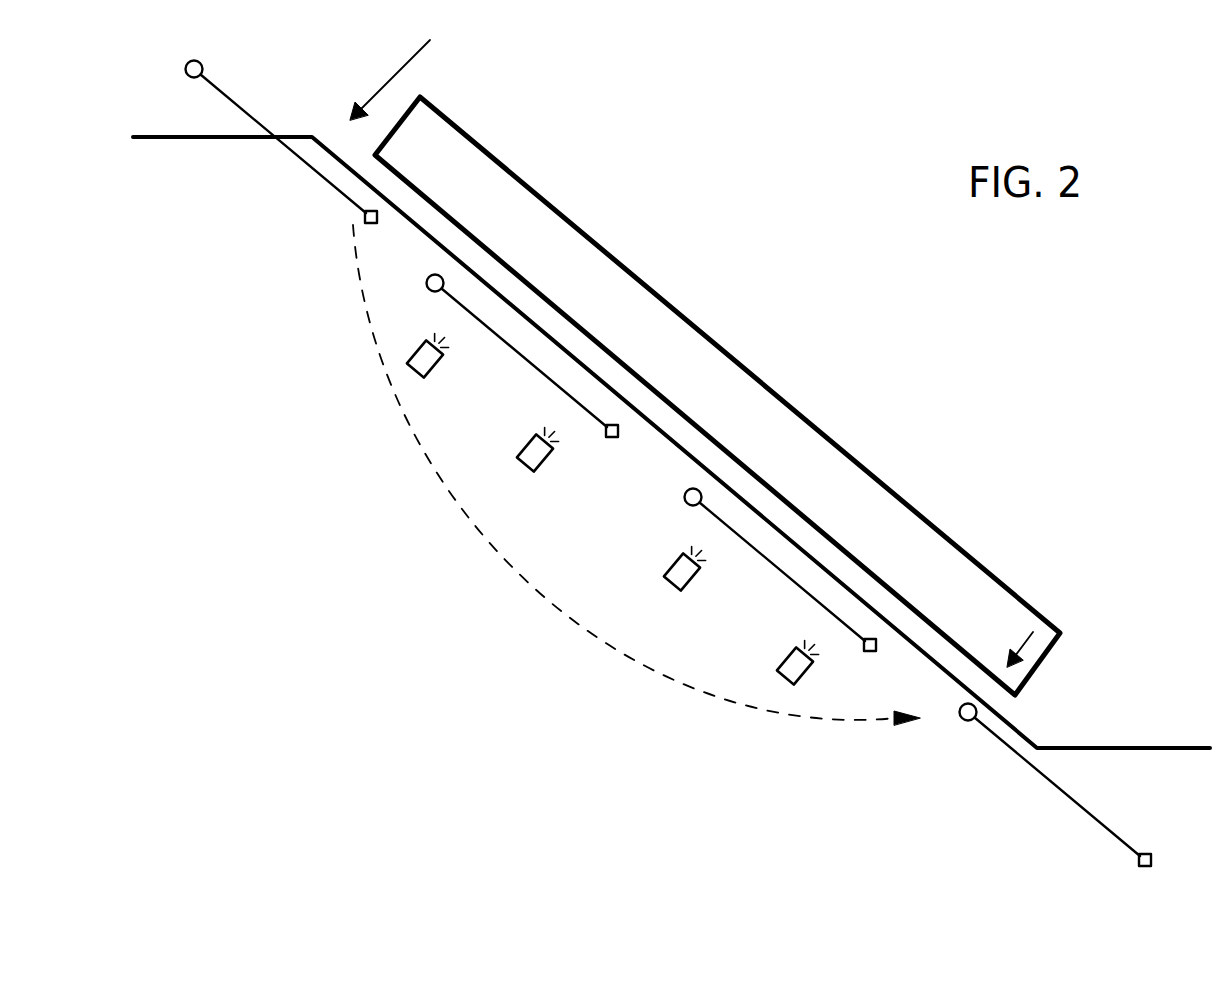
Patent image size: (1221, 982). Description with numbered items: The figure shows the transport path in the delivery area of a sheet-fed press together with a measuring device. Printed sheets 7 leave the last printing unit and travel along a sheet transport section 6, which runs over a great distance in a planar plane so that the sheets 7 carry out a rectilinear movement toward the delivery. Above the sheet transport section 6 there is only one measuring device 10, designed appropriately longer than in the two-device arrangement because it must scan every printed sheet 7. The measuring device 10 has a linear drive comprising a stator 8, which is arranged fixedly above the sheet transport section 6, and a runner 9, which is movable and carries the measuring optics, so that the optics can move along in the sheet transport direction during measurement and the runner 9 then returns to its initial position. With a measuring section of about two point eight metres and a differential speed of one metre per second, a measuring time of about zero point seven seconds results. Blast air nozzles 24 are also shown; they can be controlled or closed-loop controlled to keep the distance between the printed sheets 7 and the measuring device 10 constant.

The sheet transport section 6 is at (399, 63).
The printed sheet 7 is at (293, 155).
The stator 8 is at (445, 157).
The runner 9 is at (1032, 645).
The measuring device 10 is at (702, 317).
The blast air nozzles 24 is at (525, 462).